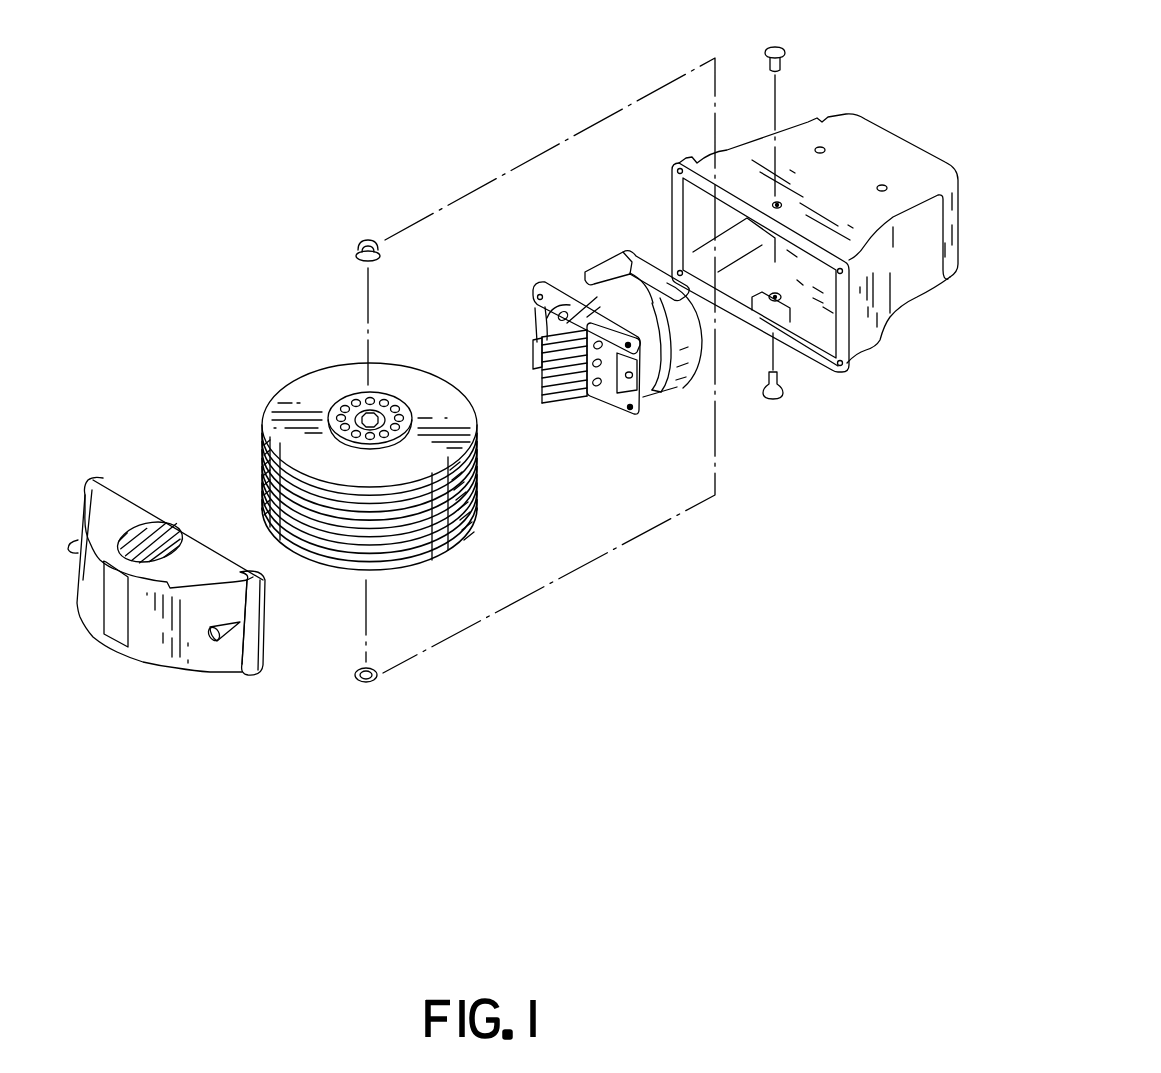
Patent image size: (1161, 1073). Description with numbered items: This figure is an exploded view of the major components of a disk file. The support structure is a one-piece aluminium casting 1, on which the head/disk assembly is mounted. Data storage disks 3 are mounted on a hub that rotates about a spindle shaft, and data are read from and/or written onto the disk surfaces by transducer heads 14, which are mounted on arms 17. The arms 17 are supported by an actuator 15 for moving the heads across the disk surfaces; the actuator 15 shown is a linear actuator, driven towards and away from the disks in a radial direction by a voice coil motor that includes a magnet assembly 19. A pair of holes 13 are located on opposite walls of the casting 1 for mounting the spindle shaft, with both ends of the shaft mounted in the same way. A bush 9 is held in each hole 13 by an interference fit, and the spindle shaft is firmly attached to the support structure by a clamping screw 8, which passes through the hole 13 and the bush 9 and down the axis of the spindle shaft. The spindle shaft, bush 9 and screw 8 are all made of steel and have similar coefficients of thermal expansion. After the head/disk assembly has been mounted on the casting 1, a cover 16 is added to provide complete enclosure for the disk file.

The one-piece aluminium casting 1 is at (907, 301).
The data storage disks 3 is at (283, 387).
The clamping screw 8 is at (780, 44).
The bush 9 is at (362, 243).
The holes 13 is at (778, 293).
The transducer heads 14 is at (543, 402).
The actuator 15 is at (612, 268).
The cover 16 is at (152, 666).
The arms 17 is at (570, 400).
The magnet assembly 19 is at (680, 390).